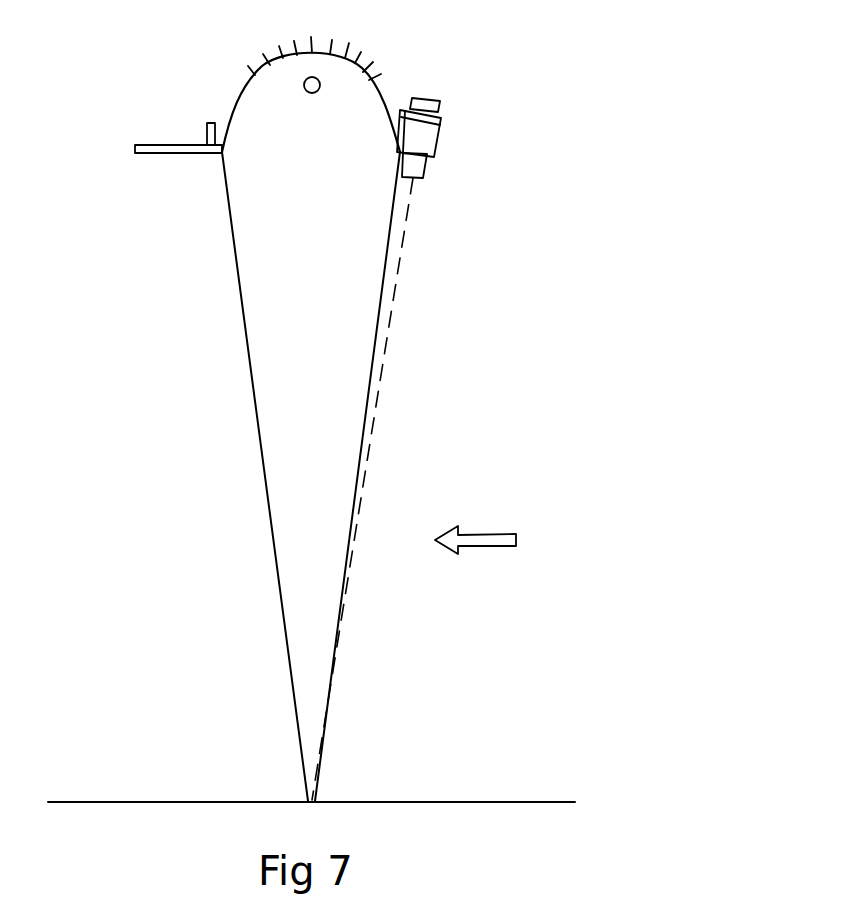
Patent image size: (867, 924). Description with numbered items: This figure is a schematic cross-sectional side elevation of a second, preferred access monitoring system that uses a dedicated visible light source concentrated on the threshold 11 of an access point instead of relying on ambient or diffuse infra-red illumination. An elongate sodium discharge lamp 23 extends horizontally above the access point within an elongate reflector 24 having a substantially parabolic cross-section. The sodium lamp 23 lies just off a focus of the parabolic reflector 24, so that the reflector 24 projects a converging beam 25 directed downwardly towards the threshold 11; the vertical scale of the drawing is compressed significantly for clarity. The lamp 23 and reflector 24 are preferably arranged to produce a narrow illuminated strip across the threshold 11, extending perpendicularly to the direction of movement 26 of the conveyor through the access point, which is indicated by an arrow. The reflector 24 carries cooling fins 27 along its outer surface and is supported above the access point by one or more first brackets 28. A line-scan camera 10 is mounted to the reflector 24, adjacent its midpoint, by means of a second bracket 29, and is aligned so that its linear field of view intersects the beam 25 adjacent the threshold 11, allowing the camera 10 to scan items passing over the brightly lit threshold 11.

The line-scan camera 10 is at (422, 138).
The threshold 11 is at (322, 797).
The sodium discharge lamp 23 is at (318, 87).
The reflector 24 is at (237, 108).
The converging beam 25 is at (297, 585).
The direction of movement 26 is at (475, 527).
The cooling fins 27 is at (268, 43).
The first brackets 28 is at (175, 153).
The second bracket 29 is at (440, 116).